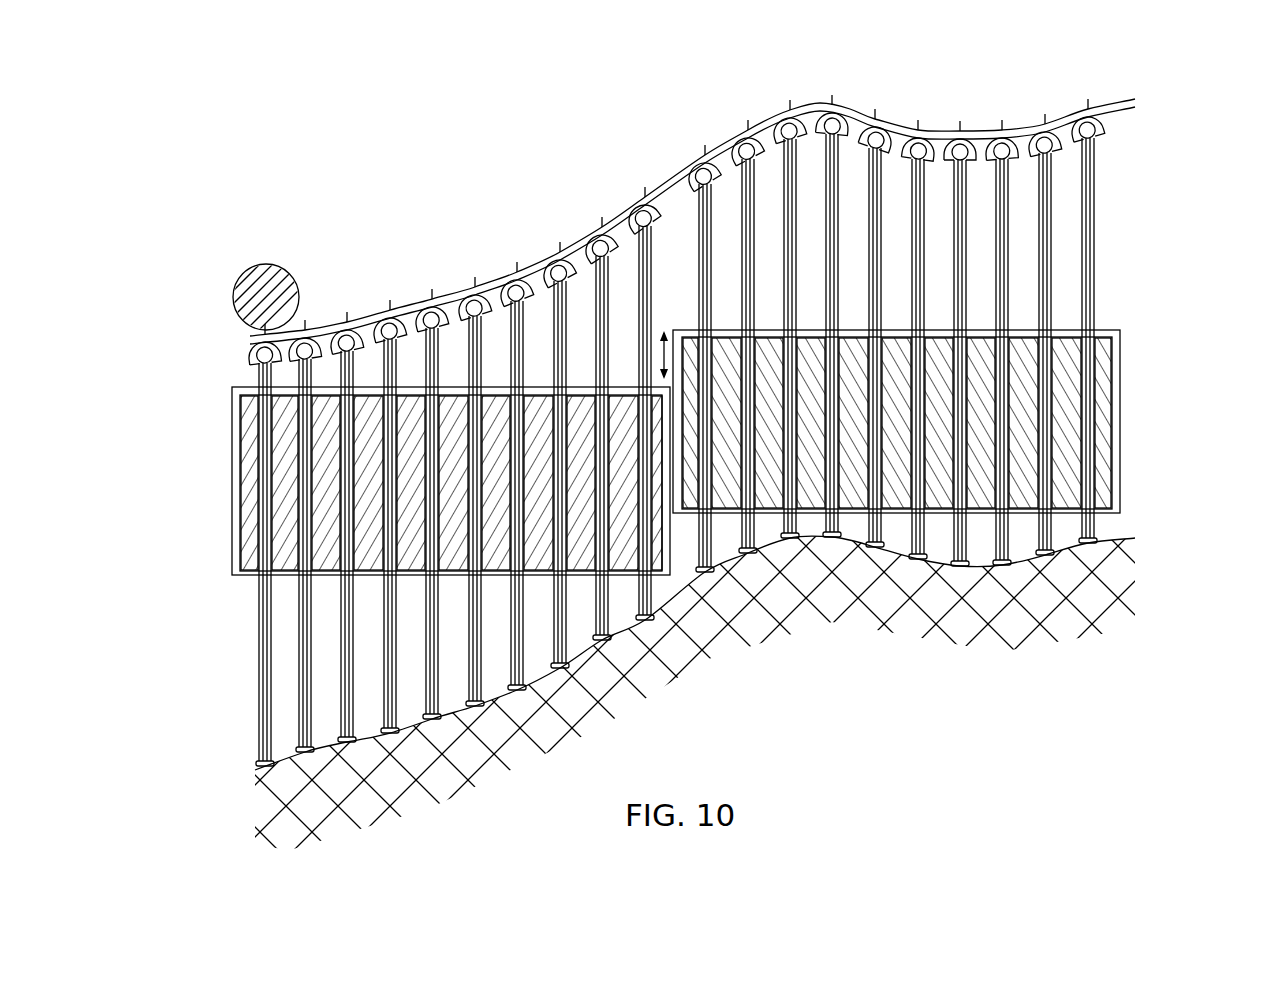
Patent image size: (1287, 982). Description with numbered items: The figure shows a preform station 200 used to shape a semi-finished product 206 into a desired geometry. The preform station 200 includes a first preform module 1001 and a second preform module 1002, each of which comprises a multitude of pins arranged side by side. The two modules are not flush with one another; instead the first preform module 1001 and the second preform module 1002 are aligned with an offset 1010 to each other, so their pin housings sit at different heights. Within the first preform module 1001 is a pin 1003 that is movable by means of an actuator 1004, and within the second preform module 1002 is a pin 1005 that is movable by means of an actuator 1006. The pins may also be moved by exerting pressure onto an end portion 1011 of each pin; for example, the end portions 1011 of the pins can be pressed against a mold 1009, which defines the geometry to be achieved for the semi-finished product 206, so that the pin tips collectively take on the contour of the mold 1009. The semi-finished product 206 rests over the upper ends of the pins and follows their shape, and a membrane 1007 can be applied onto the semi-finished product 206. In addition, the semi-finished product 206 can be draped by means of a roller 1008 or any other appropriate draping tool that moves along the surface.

The preform station 200 is at (146, 146).
The semi-finished product 206 is at (1120, 112).
The first preform module 1001 is at (232, 482).
The second preform module 1002 is at (1120, 470).
The pin 1003 is at (212, 551).
The actuator 1004 is at (232, 560).
The pin 1005 is at (1096, 238).
The actuator 1006 is at (1115, 395).
The membrane 1007 is at (1108, 103).
The roller 1008 is at (272, 266).
The mold 1009 is at (1156, 618).
The offset 1010 is at (664, 330).
The end portion 1011 is at (252, 752).